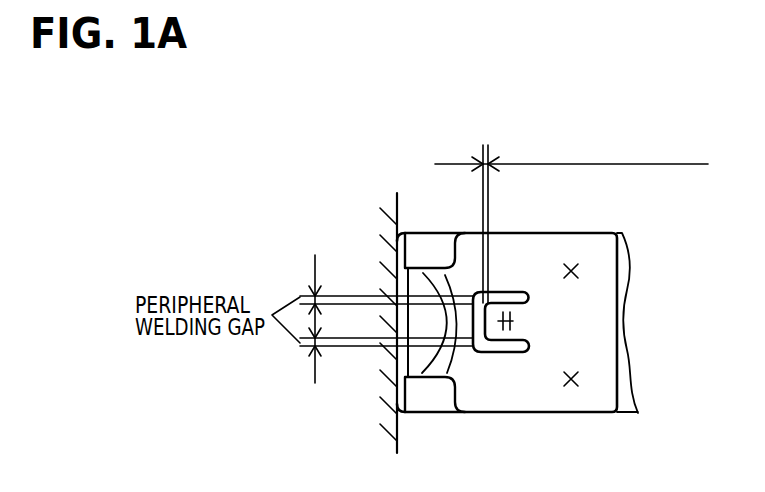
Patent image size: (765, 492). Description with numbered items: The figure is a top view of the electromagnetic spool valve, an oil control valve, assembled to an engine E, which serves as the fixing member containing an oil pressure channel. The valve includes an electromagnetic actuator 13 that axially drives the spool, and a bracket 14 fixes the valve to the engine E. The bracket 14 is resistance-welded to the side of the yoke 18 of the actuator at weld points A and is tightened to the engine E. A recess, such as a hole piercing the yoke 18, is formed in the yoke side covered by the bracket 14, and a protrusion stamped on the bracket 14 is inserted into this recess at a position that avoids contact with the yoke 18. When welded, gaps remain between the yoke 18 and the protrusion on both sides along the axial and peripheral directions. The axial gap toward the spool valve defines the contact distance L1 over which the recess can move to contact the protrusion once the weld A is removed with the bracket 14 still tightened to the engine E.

The engine E is at (398, 212).
The bracket 14 is at (600, 398).
The electromagnetic actuator 13 is at (640, 425).
The yoke 18 is at (432, 402).
The contact distance L1 is at (483, 148).
The weld A is at (574, 271).